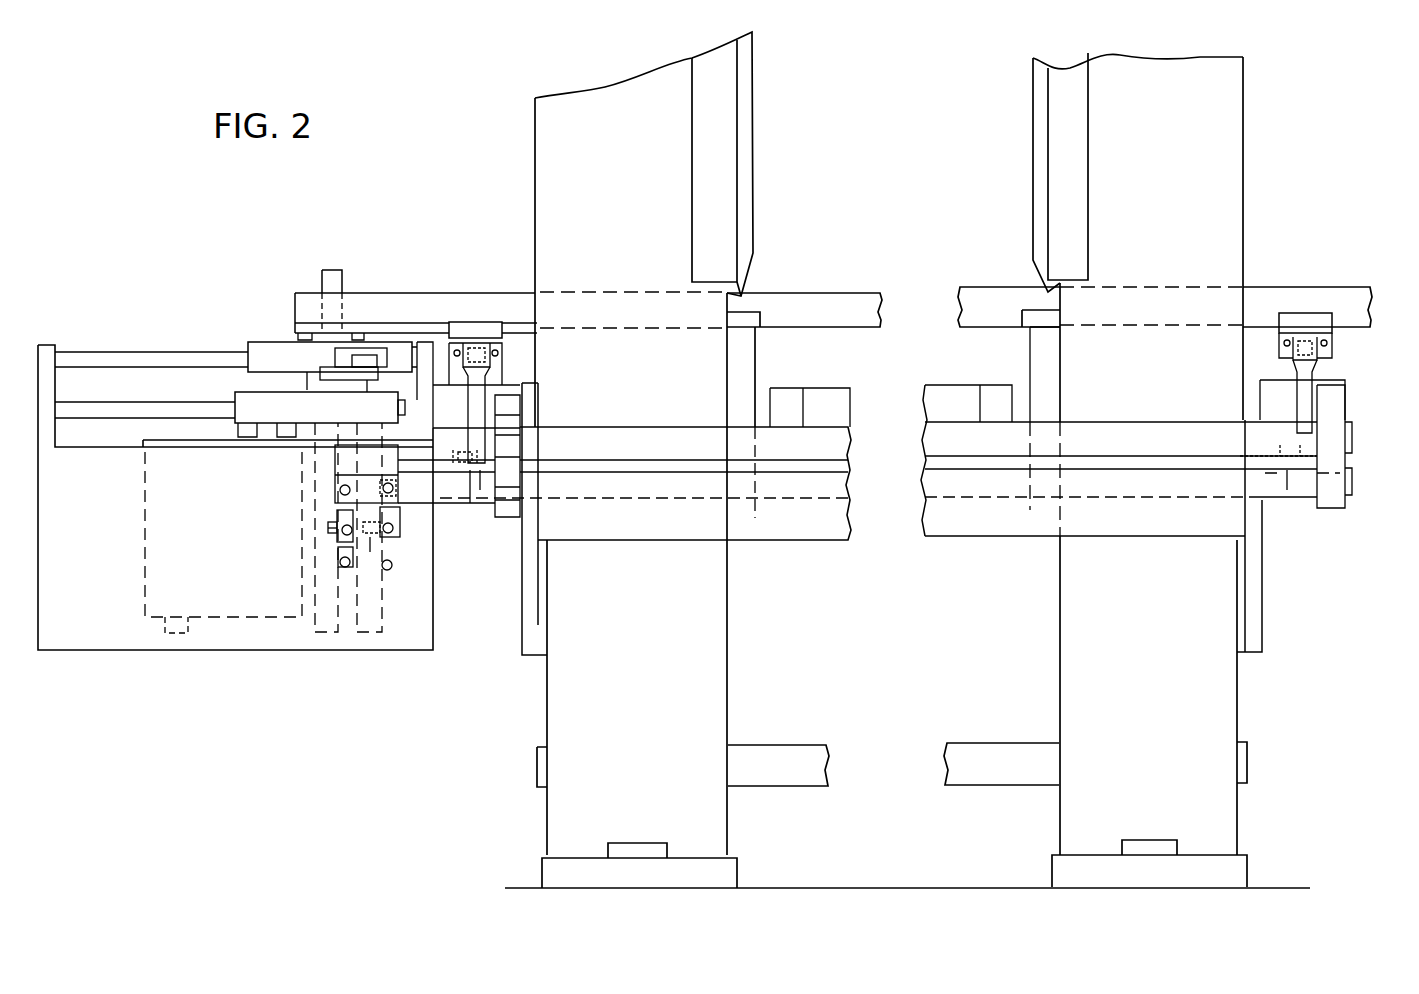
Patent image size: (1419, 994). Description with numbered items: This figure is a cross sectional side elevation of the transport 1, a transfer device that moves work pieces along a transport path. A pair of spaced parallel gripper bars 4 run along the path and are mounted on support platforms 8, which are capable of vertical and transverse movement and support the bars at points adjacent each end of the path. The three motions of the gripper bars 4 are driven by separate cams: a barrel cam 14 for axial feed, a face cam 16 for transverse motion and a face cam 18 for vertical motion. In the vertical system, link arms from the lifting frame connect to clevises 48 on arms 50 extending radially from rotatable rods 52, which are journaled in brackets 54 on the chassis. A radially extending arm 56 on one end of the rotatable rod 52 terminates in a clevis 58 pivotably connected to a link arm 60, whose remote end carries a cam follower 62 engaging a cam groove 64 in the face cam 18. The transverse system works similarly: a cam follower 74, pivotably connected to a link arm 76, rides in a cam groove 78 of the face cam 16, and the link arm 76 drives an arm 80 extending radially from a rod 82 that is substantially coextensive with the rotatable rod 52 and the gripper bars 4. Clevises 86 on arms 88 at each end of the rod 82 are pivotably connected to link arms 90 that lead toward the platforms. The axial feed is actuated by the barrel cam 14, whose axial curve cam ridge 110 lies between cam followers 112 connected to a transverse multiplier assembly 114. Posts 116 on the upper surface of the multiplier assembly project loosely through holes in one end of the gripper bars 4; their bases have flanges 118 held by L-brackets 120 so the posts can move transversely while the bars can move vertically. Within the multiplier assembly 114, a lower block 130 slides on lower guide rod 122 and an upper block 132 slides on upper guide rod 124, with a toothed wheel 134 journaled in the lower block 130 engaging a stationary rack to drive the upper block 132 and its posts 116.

The transport 1 is at (339, 233).
The gripper bars 4 is at (410, 300).
The support platforms 8 is at (455, 322).
The barrel cam 14 is at (168, 560).
The face cam 16 is at (384, 582).
The face cam 18 is at (330, 615).
The clevises 48 is at (463, 477).
The arms 50 is at (470, 470).
The rotatable rods 52 is at (1198, 485).
The brackets 54 is at (517, 505).
The radially extending arm 56 is at (350, 500).
The clevis 58 is at (340, 515).
The link arm 60 is at (335, 528).
The cam follower 62 is at (330, 528).
The cam groove 64 is at (335, 538).
The cam follower 74 is at (378, 540).
The link arm 76 is at (372, 535).
The cam groove 78 is at (392, 528).
The arm 80 is at (392, 478).
The rod 82 is at (968, 437).
The clevises 86 is at (503, 360).
The arms 88 is at (468, 404).
The link arms 90 is at (478, 345).
The axial curve cam ridge 110 is at (265, 430).
The cam followers 112 is at (243, 430).
The transverse multiplier assembly 114 is at (255, 326).
The posts 116 is at (322, 277).
The flanges 118 is at (305, 334).
The L-brackets 120 is at (357, 335).
The guide rod 122 is at (112, 410).
The guide rod 124 is at (122, 365).
The lower block 130 is at (300, 418).
The upper block 132 is at (253, 353).
The toothed wheel 134 is at (315, 378).